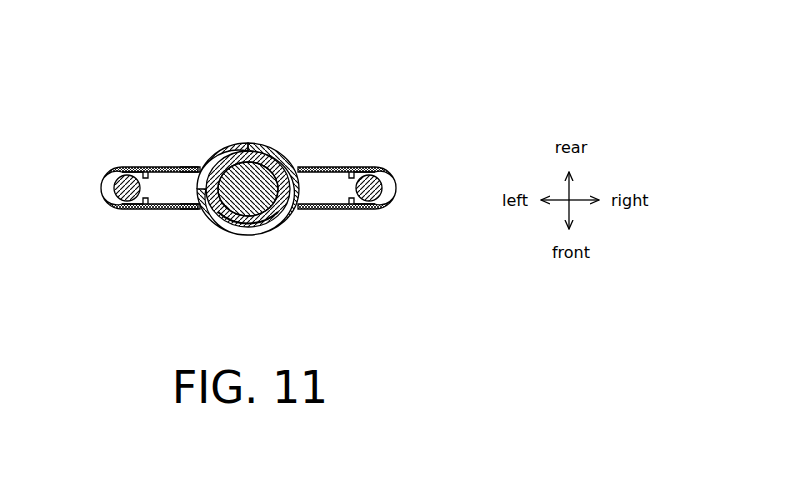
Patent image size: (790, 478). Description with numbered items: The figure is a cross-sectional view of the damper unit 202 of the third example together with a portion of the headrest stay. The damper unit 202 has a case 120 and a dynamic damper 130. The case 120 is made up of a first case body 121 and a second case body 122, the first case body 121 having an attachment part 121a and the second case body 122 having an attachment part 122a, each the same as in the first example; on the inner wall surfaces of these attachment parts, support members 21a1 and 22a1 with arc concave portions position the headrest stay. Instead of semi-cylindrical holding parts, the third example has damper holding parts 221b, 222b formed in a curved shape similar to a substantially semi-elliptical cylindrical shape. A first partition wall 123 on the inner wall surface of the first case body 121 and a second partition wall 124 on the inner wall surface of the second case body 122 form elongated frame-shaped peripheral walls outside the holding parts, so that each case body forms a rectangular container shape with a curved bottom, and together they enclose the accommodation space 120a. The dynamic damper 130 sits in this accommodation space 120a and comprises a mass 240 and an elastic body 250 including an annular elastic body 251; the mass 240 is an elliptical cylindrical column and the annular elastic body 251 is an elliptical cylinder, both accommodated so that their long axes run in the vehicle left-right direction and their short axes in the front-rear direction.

The damper unit 202 is at (394, 131).
The dynamic damper 130 is at (230, 57).
The elastic body 250 is at (238, 150).
The mass 240 is at (279, 150).
The annular elastic body 251 is at (256, 231).
The case 120 is at (355, 166).
The accommodation space 120a is at (289, 221).
The first case body 121 is at (323, 166).
The second case body 122 is at (323, 210).
The attachment part 121a is at (112, 170).
The attachment part 122a is at (112, 205).
The first partition wall 123 is at (188, 168).
The second partition wall 124 is at (188, 206).
The support member 21a1 is at (140, 168).
The support member 22a1 is at (145, 207).
The damper holding part 221b is at (216, 146).
The damper holding part 222b is at (222, 232).